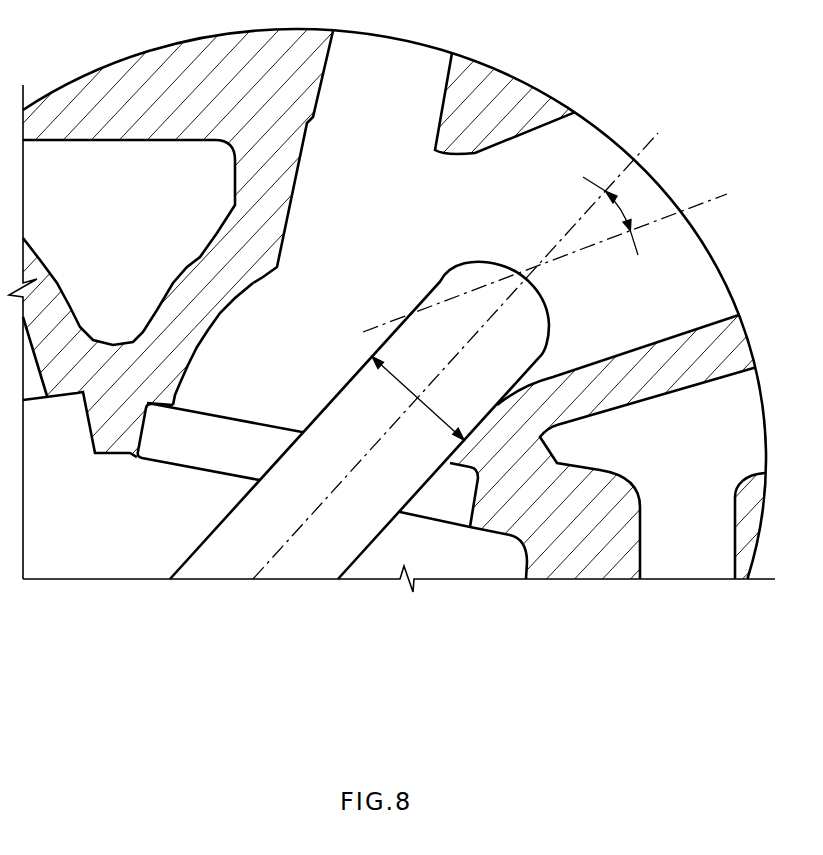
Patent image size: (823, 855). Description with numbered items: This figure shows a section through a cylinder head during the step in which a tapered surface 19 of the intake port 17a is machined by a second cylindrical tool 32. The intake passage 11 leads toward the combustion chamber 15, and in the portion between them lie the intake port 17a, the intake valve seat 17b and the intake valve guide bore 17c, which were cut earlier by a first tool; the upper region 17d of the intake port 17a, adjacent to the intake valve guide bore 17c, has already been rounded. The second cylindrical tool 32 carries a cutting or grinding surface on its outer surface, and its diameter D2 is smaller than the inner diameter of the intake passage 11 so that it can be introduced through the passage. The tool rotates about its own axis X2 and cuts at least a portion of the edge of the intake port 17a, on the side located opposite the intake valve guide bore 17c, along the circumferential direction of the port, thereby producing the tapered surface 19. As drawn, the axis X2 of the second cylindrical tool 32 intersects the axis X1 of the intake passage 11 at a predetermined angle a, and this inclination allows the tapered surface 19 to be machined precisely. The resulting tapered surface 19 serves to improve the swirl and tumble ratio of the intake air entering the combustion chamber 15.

The intake passage 11 is at (668, 304).
The combustion chamber 15 is at (112, 539).
The intake port 17a is at (274, 371).
The intake valve seat 17b is at (205, 450).
The intake valve guide bore 17c is at (408, 99).
The upper region of the intake port 17d is at (248, 288).
The tapered surface 19 is at (483, 410).
The second cylindrical tool 32 is at (393, 532).
The axis of the intake passage X1 is at (657, 222).
The axis of the second cylindrical tool X2 is at (620, 177).
The predetermined angle a is at (612, 216).
The diameter of the second cylindrical tool D2 is at (418, 399).